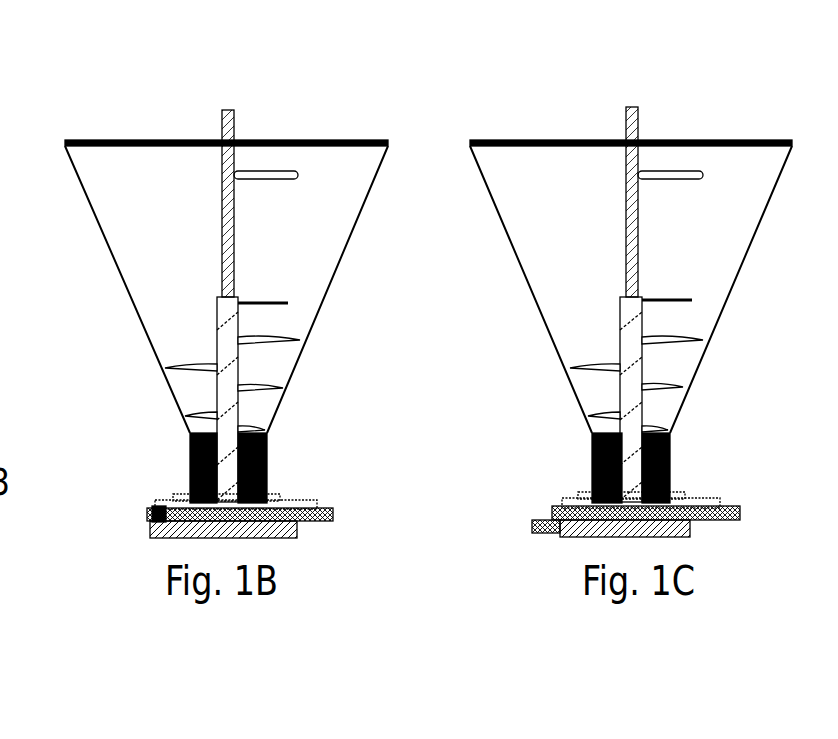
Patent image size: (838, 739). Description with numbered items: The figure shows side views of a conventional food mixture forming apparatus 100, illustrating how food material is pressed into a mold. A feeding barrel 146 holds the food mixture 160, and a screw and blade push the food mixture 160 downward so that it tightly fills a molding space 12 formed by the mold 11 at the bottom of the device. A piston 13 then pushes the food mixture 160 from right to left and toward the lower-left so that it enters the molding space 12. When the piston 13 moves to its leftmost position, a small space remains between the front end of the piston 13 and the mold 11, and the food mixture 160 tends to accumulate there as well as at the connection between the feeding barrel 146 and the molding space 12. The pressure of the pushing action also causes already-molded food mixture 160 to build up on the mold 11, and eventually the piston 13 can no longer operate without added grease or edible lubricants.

In FIG. 1B, the feeding device 100 is at (83, 76).
In FIG. 1C, the feeding device 100 is at (475, 76).
In FIG. 1B, the feeding barrel 146 is at (322, 257).
In FIG. 1C, the feeding barrel 146 is at (735, 240).
In FIG. 1B, the food mixture 160 is at (267, 436).
In FIG. 1C, the food mixture 160 is at (668, 455).
In FIG. 1B, the mold 11 is at (173, 498).
In FIG. 1C, the mold 11 is at (573, 498).
In FIG. 1B, the molding space 12 is at (152, 512).
In FIG. 1B, the piston 13 is at (335, 517).
In FIG. 1C, the piston 13 is at (740, 517).